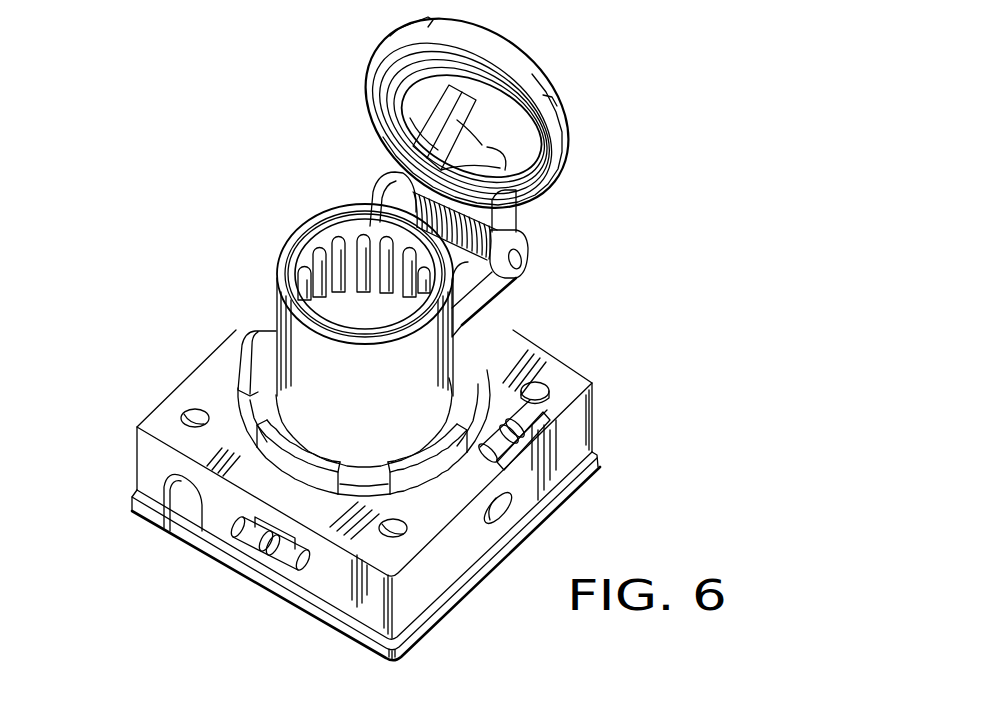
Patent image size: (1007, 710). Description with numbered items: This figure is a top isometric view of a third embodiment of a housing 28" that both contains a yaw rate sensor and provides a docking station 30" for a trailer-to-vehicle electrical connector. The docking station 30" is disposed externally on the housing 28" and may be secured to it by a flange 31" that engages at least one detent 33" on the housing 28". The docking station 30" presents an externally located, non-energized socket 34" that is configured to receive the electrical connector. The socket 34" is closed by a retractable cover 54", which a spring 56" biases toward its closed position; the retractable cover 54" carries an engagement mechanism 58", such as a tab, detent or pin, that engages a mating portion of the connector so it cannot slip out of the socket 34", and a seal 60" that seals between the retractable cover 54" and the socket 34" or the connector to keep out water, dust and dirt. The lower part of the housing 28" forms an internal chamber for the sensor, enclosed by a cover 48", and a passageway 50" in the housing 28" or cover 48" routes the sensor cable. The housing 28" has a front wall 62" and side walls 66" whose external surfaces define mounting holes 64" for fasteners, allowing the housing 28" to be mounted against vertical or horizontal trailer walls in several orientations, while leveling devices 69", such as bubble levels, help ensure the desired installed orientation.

The housing 28 is at (183, 208).
The retractable cover 54 is at (363, 96).
The seal 60 is at (548, 160).
The engagement mechanism 58 is at (517, 197).
The spring 56 is at (412, 197).
The flange 31 is at (470, 382).
The docking station 30 is at (271, 327).
The socket 34 is at (363, 307).
The detent 33 is at (245, 348).
The front wall 62 is at (200, 447).
The side walls 66 is at (138, 428).
The cover 48 is at (572, 503).
The passageway 50 is at (190, 499).
The mounting holes 64 is at (190, 420).
The leveling devices 69 is at (290, 562).